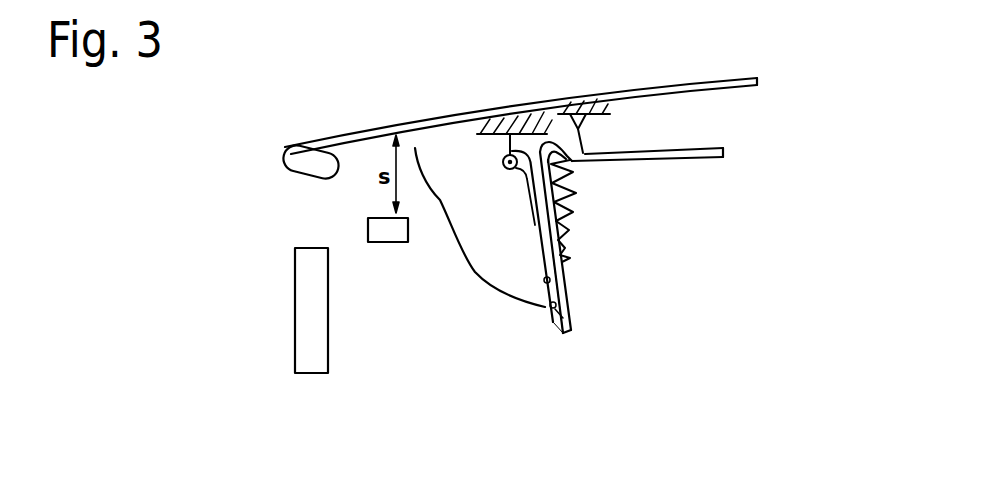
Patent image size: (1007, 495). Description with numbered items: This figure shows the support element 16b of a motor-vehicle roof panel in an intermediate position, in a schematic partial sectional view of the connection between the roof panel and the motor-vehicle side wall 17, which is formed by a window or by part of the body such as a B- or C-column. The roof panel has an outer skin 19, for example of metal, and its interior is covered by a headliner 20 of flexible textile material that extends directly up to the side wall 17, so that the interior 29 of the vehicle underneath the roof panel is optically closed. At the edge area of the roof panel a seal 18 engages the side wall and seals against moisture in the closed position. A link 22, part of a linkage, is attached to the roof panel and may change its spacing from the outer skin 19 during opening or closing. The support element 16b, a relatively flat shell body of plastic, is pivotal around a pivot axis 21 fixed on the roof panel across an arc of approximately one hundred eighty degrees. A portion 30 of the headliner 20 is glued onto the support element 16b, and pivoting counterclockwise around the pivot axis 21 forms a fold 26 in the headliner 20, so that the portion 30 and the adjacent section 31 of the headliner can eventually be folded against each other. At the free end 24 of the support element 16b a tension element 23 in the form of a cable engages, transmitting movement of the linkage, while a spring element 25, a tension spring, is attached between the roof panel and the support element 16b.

The support element 16b is at (537, 222).
The motor-vehicle side wall 17 is at (313, 338).
The seal 18 is at (289, 157).
The outer skin 19 is at (720, 82).
The headliner 20 is at (720, 143).
The pivot axis 21 is at (502, 160).
The link 22 is at (380, 230).
The tension element 23 is at (477, 272).
The free end 24 is at (553, 322).
The spring element 25 is at (567, 213).
The fold 26 is at (549, 140).
The interior 29 is at (781, 229).
The portion 30 is at (564, 282).
The section 31 is at (673, 153).